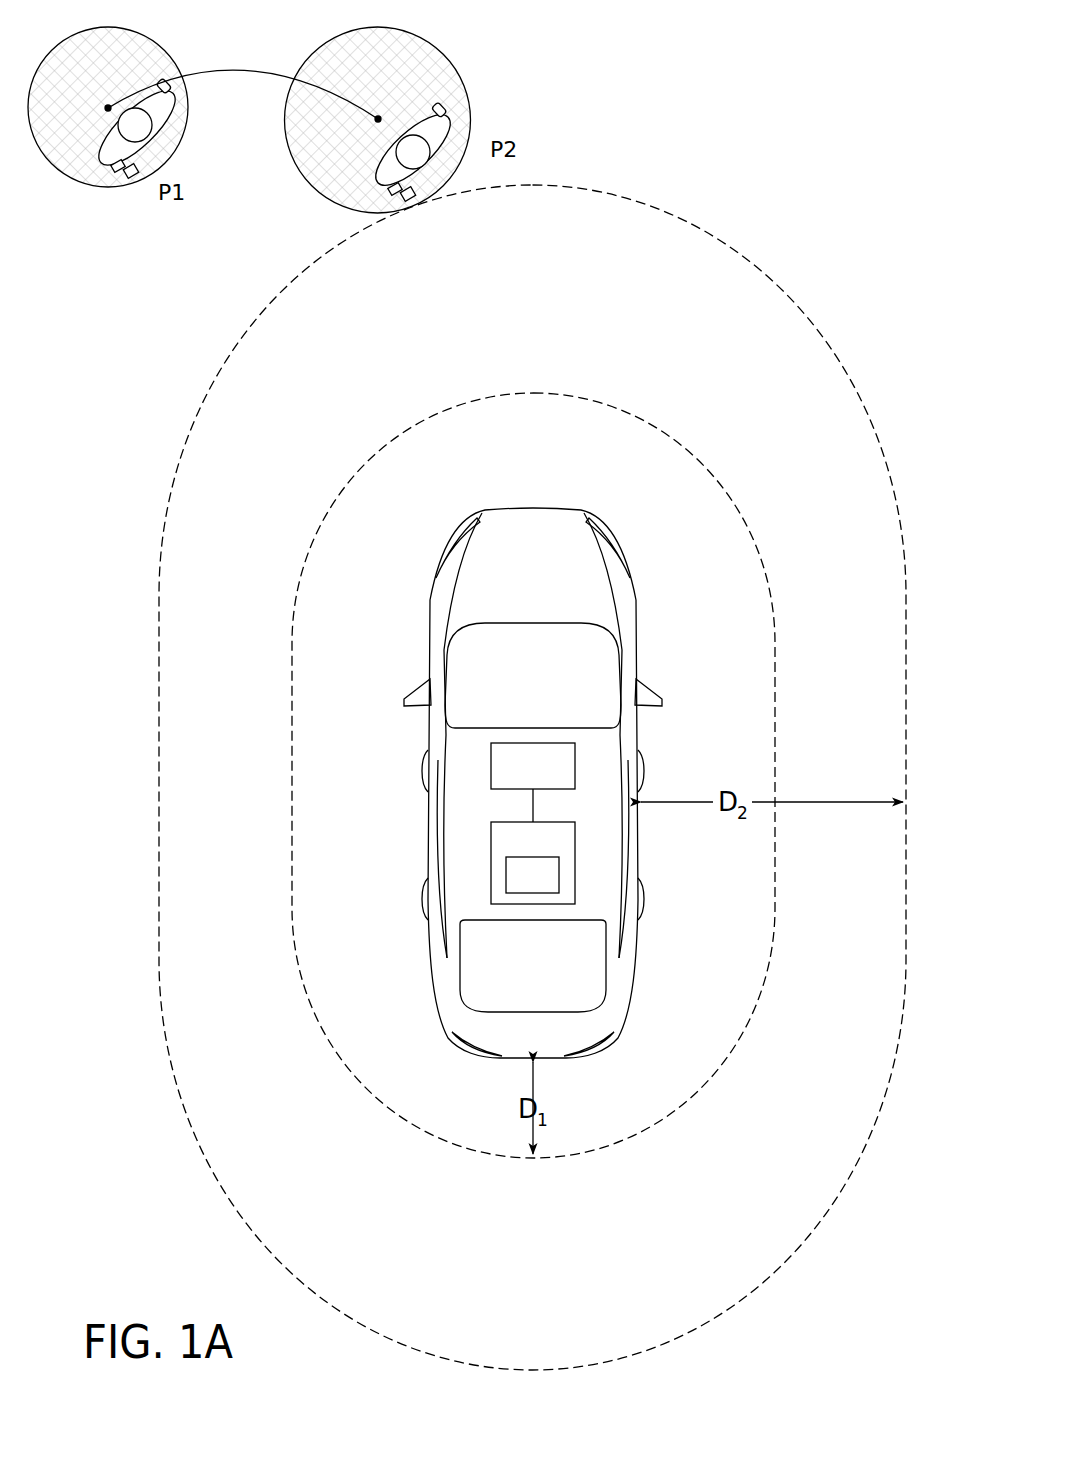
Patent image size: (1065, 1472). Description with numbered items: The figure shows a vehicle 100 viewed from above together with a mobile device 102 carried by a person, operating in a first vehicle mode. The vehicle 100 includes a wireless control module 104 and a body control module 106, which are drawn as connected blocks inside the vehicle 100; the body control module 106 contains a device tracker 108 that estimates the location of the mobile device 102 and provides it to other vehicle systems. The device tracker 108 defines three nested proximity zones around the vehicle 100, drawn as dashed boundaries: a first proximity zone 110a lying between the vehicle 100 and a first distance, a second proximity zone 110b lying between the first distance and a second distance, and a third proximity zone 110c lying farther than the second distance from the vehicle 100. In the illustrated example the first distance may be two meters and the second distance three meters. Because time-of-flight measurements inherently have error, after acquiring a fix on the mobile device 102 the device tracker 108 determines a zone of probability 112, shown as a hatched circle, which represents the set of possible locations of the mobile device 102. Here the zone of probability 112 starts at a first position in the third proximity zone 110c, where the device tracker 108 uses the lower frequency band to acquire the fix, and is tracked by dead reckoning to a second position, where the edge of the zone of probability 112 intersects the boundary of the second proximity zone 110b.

The vehicle 100 is at (560, 508).
The mobile device 102 is at (124, 186).
The wireless control module 104 is at (531, 743).
The body control module 106 is at (533, 904).
The device tracker 108 is at (514, 889).
The first proximity zone 110a is at (662, 585).
The second proximity zone 110b is at (751, 487).
The third proximity zone 110c is at (851, 336).
The zone of probability 112 is at (162, 38).